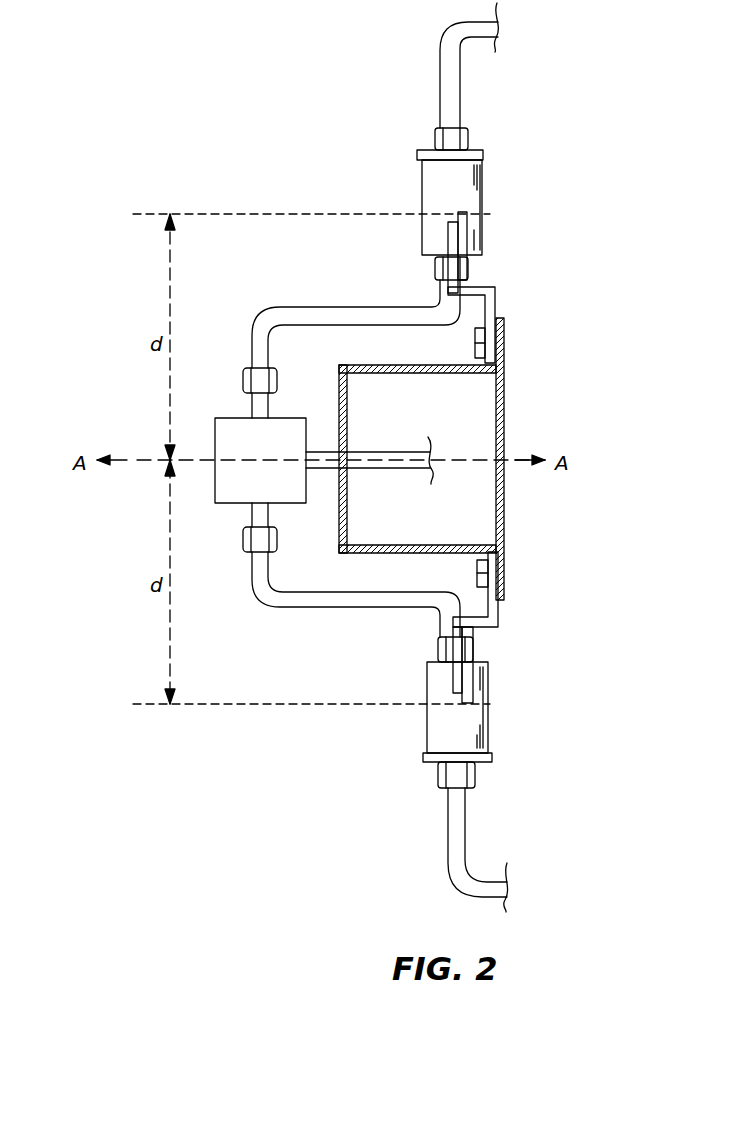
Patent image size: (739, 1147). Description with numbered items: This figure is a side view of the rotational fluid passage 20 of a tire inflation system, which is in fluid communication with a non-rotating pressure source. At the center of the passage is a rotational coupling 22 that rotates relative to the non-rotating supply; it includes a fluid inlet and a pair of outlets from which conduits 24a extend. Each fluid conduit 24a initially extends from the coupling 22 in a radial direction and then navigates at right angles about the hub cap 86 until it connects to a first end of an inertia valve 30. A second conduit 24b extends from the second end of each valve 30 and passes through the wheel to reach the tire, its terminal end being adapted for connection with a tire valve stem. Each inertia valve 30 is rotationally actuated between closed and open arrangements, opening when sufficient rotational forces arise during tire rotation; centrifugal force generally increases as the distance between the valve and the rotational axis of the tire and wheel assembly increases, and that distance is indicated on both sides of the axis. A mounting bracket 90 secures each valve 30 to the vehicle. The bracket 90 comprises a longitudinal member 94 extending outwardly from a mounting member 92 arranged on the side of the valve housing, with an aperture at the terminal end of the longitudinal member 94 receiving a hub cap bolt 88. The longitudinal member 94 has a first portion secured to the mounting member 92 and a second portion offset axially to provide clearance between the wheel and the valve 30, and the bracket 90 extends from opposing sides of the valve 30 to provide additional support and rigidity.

The rotational fluid passage 20 is at (119, 75).
The rotational coupling 22 is at (292, 438).
The fluid conduit 24a is at (357, 305).
The second conduit 24b is at (458, 76).
The inertia valve 30 is at (470, 201).
The hub cap 86 is at (503, 410).
The hub cap bolt 88 is at (475, 338).
The mounting bracket 90 is at (510, 265).
The mounting member 92 is at (467, 240).
The longitudinal member 94 is at (495, 297).